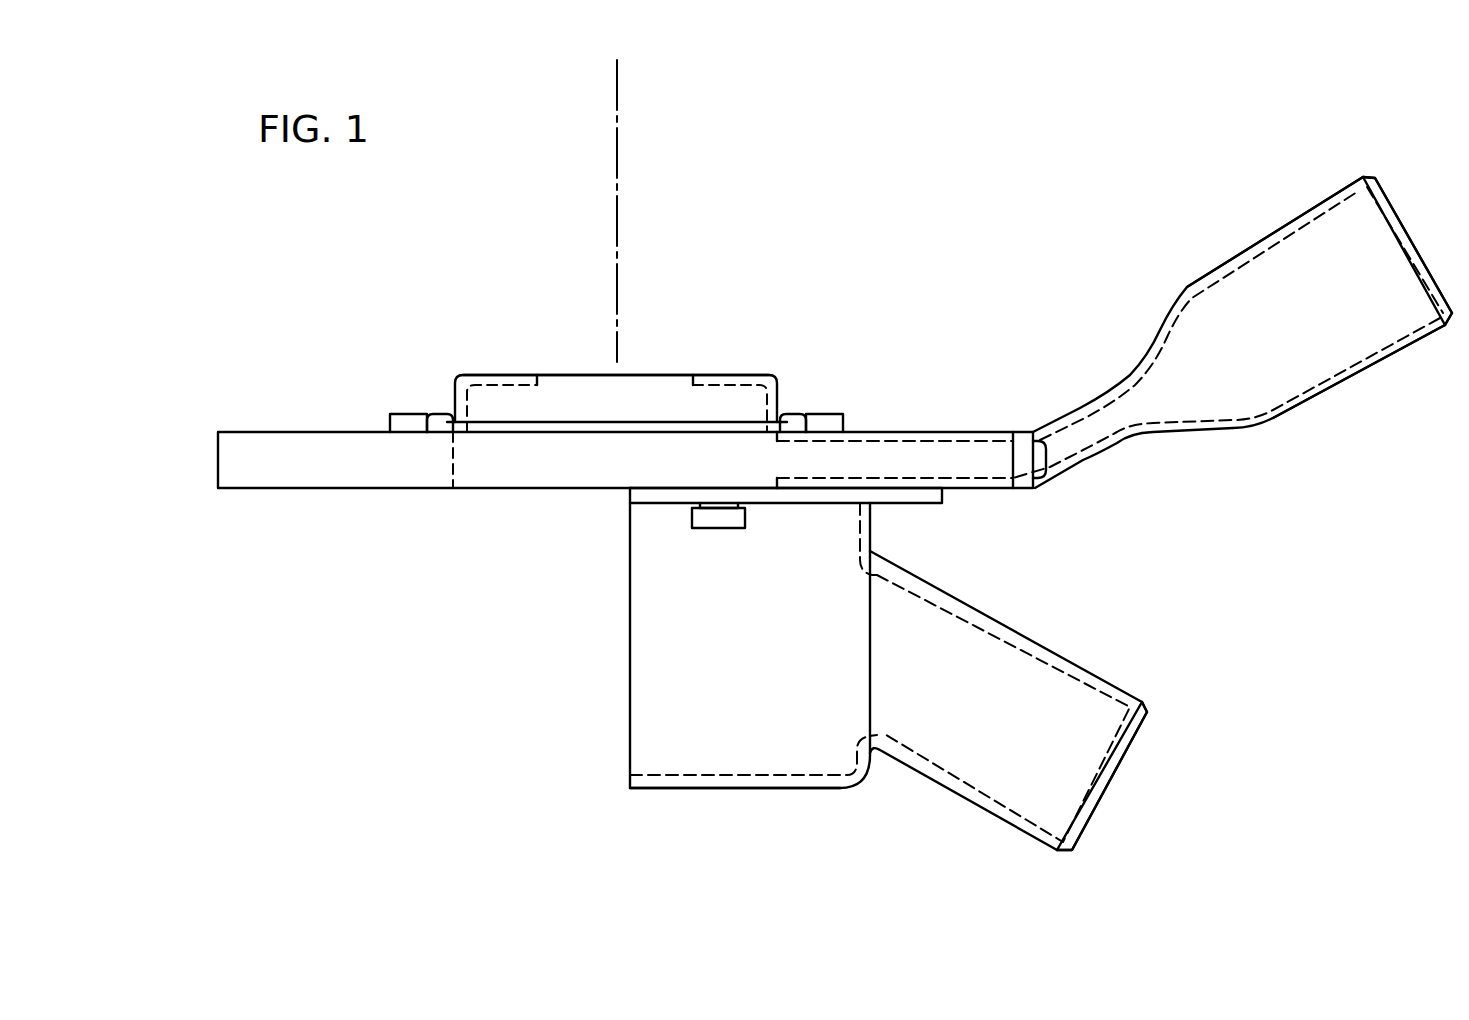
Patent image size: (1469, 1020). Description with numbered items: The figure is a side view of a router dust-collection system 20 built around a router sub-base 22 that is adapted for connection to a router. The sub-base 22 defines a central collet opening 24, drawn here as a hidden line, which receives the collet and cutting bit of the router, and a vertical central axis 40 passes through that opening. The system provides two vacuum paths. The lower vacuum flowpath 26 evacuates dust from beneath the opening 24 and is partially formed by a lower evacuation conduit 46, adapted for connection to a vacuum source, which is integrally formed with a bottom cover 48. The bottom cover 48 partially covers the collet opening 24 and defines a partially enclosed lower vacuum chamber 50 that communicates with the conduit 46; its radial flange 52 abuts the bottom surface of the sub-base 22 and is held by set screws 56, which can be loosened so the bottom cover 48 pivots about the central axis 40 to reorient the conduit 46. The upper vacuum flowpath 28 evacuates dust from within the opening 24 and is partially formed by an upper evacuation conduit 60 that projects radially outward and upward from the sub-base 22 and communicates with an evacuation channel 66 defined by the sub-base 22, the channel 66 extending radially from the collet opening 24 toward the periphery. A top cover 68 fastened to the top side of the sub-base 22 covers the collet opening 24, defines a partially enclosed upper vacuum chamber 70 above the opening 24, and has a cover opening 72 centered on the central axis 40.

The router dust-collection system 20 is at (913, 250).
The router sub-base 22 is at (217, 492).
The central collet opening 24 is at (453, 467).
The lower vacuum flowpath 26 is at (935, 605).
The upper vacuum flowpath 28 is at (1193, 287).
The central axis 40 is at (617, 230).
The lower evacuation conduit 46 is at (1095, 672).
The bottom cover 48 is at (723, 788).
The lower vacuum chamber 50 is at (662, 663).
The radial flange 52 is at (907, 503).
The set screws 56 is at (712, 528).
The upper evacuation conduit 60 is at (1283, 218).
The evacuation channel 66 is at (893, 440).
The top cover 68 is at (777, 378).
The upper vacuum chamber 70 is at (457, 388).
The cover opening 72 is at (538, 377).